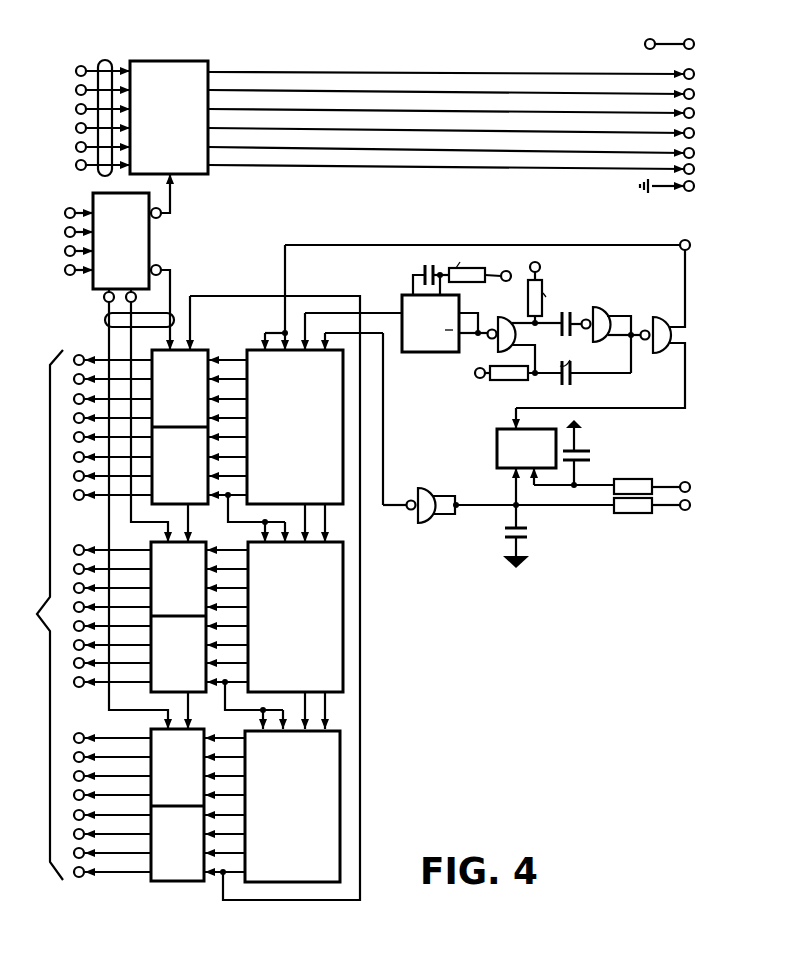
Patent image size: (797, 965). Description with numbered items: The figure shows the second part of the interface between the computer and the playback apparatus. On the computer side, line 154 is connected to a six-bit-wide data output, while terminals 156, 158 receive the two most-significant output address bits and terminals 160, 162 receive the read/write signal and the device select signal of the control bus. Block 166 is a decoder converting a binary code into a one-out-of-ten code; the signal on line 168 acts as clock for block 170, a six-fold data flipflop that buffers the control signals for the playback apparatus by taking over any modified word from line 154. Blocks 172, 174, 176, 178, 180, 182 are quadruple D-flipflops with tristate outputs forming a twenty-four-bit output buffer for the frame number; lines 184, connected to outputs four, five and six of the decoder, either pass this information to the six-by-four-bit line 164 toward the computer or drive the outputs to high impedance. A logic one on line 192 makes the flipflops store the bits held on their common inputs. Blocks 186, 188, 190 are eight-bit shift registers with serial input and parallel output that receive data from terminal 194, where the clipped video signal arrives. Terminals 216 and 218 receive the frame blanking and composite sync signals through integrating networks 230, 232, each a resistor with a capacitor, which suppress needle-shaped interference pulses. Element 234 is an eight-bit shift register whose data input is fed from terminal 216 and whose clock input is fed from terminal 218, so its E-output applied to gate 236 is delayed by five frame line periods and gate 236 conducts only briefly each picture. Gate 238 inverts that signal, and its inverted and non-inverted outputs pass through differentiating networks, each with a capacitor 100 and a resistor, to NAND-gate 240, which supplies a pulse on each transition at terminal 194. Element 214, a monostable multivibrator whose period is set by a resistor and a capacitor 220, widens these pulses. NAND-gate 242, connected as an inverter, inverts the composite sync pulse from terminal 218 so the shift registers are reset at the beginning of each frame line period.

The line 154 is at (105, 60).
The block 170 is at (181, 78).
The line 168 is at (186, 194).
The block 166 is at (127, 237).
The terminal 156 is at (66, 211).
The terminal 158 is at (66, 230).
The terminal 160 is at (66, 249).
The terminal 162 is at (66, 269).
The lines 184 is at (105, 321).
The 6×4 bit line 164 is at (79, 615).
The block 172 is at (212, 368).
The block 174 is at (184, 479).
The block 186 is at (322, 481).
The block 176 is at (172, 570).
The block 178 is at (163, 668).
The block 188 is at (310, 657).
The block 180 is at (197, 748).
The block 182 is at (170, 865).
The block 190 is at (318, 787).
The line 192 is at (231, 900).
The terminal 194 is at (690, 245).
The capacitor 220 is at (425, 272).
The element 214 is at (423, 338).
The NAND-gate 240 is at (509, 316).
The NAND-gate 238 is at (602, 309).
The NAND-gate 236 is at (660, 316).
The element 234 is at (497, 447).
The capacitor 100 is at (584, 461).
The integrating network 230 is at (625, 480).
The terminal 216 is at (684, 474).
The integrating network 232 is at (620, 513).
The terminal 218 is at (683, 513).
The NAND-gate 242 is at (424, 522).